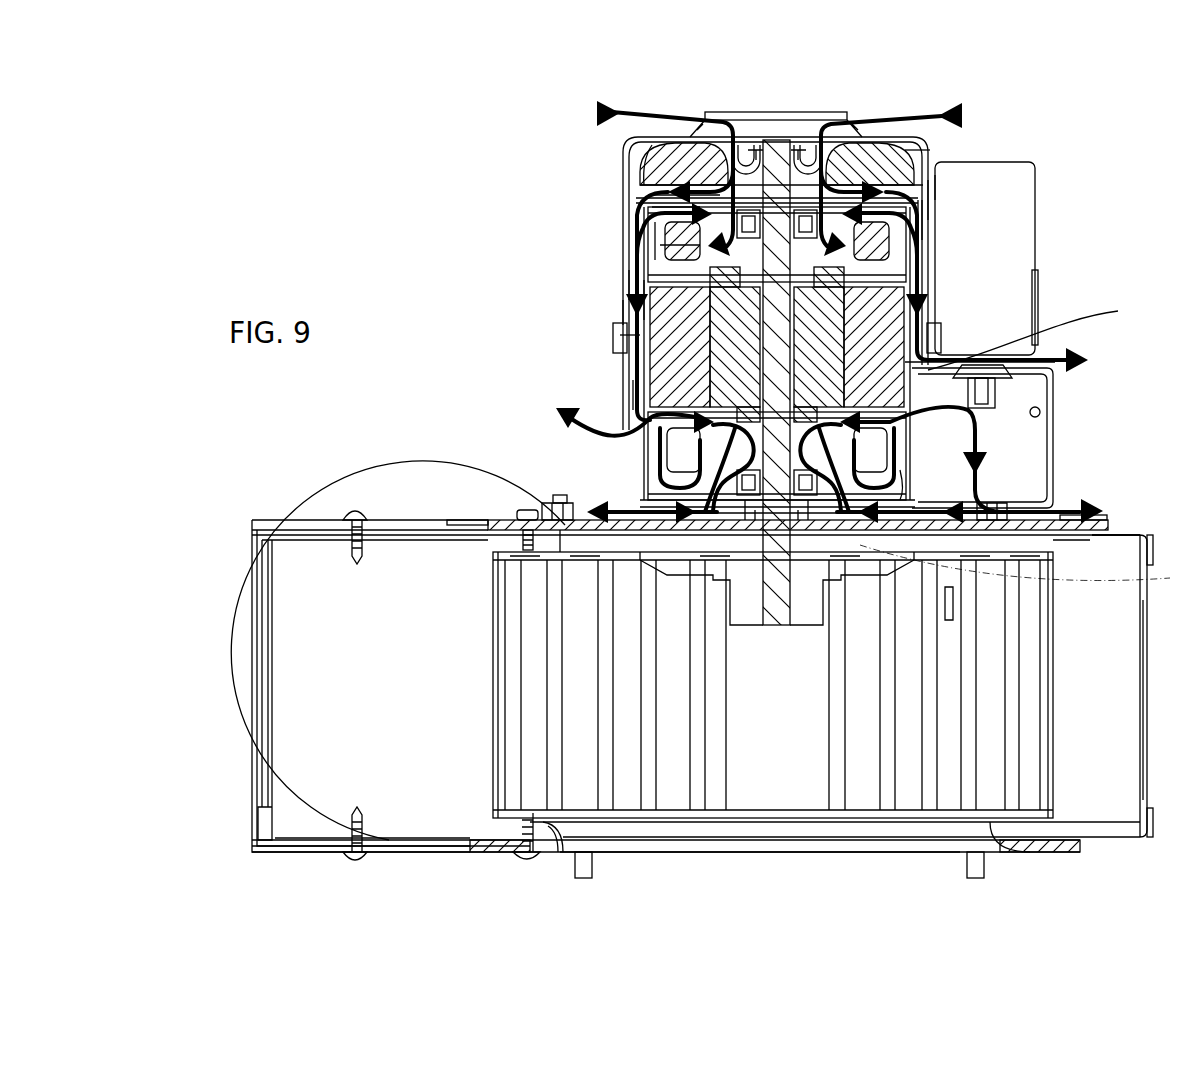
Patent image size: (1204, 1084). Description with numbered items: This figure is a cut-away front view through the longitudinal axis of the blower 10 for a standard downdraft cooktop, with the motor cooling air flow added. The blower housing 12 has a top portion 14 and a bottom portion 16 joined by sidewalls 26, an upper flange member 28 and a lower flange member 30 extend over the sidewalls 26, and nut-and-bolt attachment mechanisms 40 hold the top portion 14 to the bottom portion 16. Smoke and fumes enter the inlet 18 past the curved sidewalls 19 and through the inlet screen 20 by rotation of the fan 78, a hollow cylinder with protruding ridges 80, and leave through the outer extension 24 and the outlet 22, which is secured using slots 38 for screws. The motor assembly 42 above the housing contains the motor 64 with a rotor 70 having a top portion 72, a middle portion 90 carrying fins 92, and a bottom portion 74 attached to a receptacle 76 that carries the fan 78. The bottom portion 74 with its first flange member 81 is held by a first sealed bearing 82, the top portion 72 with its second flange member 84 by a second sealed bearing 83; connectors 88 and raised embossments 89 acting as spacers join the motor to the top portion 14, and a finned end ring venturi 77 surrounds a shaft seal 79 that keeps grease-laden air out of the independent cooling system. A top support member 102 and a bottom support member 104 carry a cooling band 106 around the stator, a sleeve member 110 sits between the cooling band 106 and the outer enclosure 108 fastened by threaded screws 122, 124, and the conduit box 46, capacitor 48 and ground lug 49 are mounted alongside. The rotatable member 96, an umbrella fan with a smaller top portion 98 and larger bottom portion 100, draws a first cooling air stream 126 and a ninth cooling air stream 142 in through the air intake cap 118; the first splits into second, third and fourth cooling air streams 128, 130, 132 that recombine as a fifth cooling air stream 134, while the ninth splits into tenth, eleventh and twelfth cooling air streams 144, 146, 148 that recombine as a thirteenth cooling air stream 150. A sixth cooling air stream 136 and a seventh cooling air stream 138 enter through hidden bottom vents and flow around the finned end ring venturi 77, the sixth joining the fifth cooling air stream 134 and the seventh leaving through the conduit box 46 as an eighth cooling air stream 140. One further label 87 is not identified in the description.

The blower 10 is at (1132, 158).
The blower housing 12 is at (1145, 680).
The top portion 14 is at (1110, 535).
The bottom portion 16 is at (1080, 846).
The inlet 18 is at (880, 912).
The curved sidewalls 19 is at (580, 878).
The inlet screen 20 is at (730, 852).
The outlet 22 is at (396, 676).
The outer extension 24 is at (265, 655).
The sidewalls 26 is at (1150, 737).
The upper flange member 28 is at (1150, 548).
The lower flange member 30 is at (1150, 820).
The slots 38 is at (530, 522).
The mechanical attachment mechanisms 40 is at (560, 495).
The motor assembly 42 is at (590, 146).
The conduit box 46 is at (1040, 400).
The capacitor 48 is at (1000, 260).
The ground lug 49 is at (1042, 410).
The motor 64 is at (890, 170).
The rotor 70 is at (650, 380).
The top portion 72 is at (648, 210).
The bottom portion 74 is at (700, 560).
The receptacle 76 is at (700, 580).
The finned end ring venturi 77 is at (570, 425).
The fan 78 is at (1045, 703).
The shaft seal 79 is at (560, 416).
The protruding ridges 80 is at (905, 818).
The first flange member 81 is at (1036, 335).
The first sealed bearing 82 is at (560, 420).
The second sealed bearing 83 is at (830, 160).
The second flange member 84 is at (880, 170).
The air circulation path 87 is at (500, 525).
The connectors 88 is at (745, 515).
The raised embossments 89 is at (755, 515).
The middle portion 90 is at (613, 335).
The fins 92 is at (625, 345).
The rotatable member 96 is at (650, 150).
The top portion 98 is at (672, 143).
The bottom portion 100 is at (648, 195).
The top support member 102 is at (928, 160).
The bottom support member 104 is at (905, 480).
The cooling band 106 is at (968, 383).
The outer enclosure 108 is at (647, 178).
The sleeve member 110 is at (644, 268).
The air intake cap 118 is at (780, 115).
The threaded screw 122 is at (620, 315).
The threaded screw 124 is at (945, 335).
The first cooling air stream 126 is at (600, 112).
The second cooling air stream 128 is at (625, 280).
The third cooling air stream 130 is at (660, 245).
The fourth cooling air stream 132 is at (655, 225).
The fifth cooling air stream 134 is at (633, 400).
The sixth cooling air stream 136 is at (560, 495).
The seventh cooling air stream 138 is at (1060, 520).
The eighth cooling air stream 140 is at (1110, 510).
The ninth cooling air stream 142 is at (966, 112).
The tenth cooling air stream 144 is at (925, 240).
The eleventh cooling air stream 146 is at (930, 215).
The twelfth cooling air stream 148 is at (935, 185).
The thirteenth cooling air stream 150 is at (1060, 360).